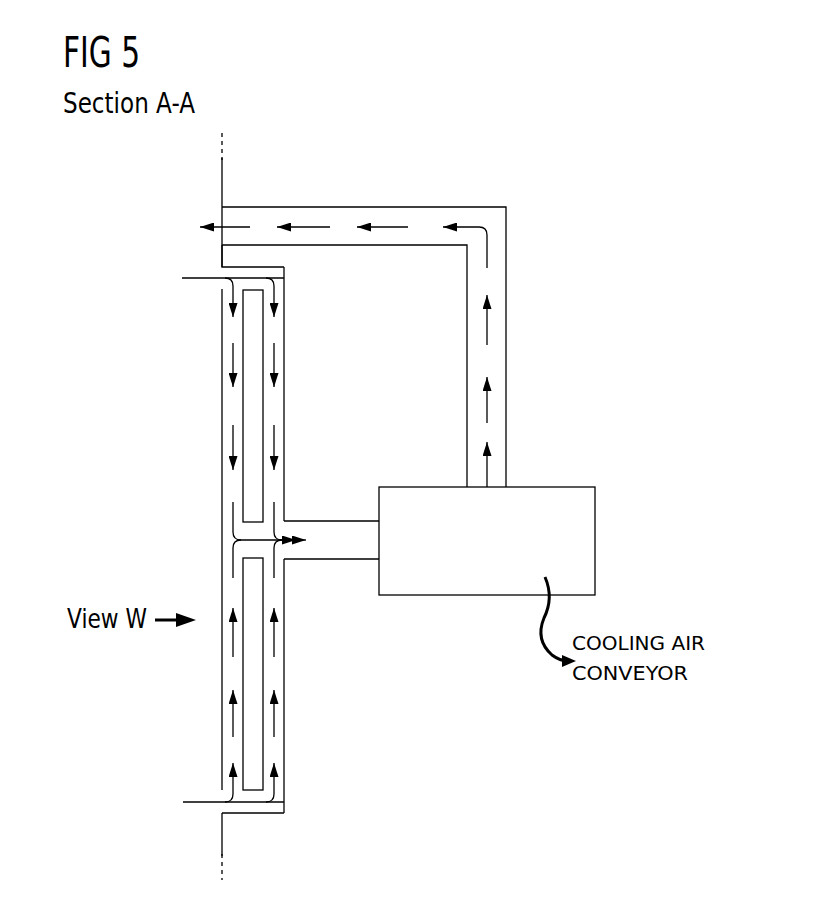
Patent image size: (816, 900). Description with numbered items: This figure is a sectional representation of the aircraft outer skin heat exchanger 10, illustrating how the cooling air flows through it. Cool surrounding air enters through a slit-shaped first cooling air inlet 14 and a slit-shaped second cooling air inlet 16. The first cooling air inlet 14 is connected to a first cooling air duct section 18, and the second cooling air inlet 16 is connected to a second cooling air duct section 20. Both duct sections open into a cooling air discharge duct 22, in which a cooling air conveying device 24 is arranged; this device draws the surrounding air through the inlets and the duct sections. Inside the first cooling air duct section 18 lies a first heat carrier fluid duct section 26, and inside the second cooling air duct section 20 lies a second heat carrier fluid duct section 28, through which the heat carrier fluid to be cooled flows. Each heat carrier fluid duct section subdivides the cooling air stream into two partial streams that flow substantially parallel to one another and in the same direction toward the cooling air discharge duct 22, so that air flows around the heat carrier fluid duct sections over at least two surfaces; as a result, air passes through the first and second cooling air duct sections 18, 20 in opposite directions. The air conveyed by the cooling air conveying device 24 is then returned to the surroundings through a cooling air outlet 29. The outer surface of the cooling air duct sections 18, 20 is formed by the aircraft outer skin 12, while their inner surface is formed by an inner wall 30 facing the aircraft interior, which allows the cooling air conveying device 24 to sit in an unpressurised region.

The aircraft outer skin heat exchanger 10 is at (140, 323).
The aircraft outer skin 12 is at (224, 540).
The first cooling air inlet 14 is at (194, 277).
The second cooling air inlet 16 is at (222, 808).
The first cooling air duct section 18 is at (274, 329).
The second cooling air duct section 20 is at (276, 748).
The cooling air discharge duct 22 is at (329, 520).
The cooling air conveying device 24 is at (488, 586).
The first heat carrier fluid duct section 26 is at (256, 406).
The second heat carrier fluid duct section 28 is at (256, 675).
The cooling air outlet 29 is at (220, 212).
The inner wall 30 is at (285, 650).